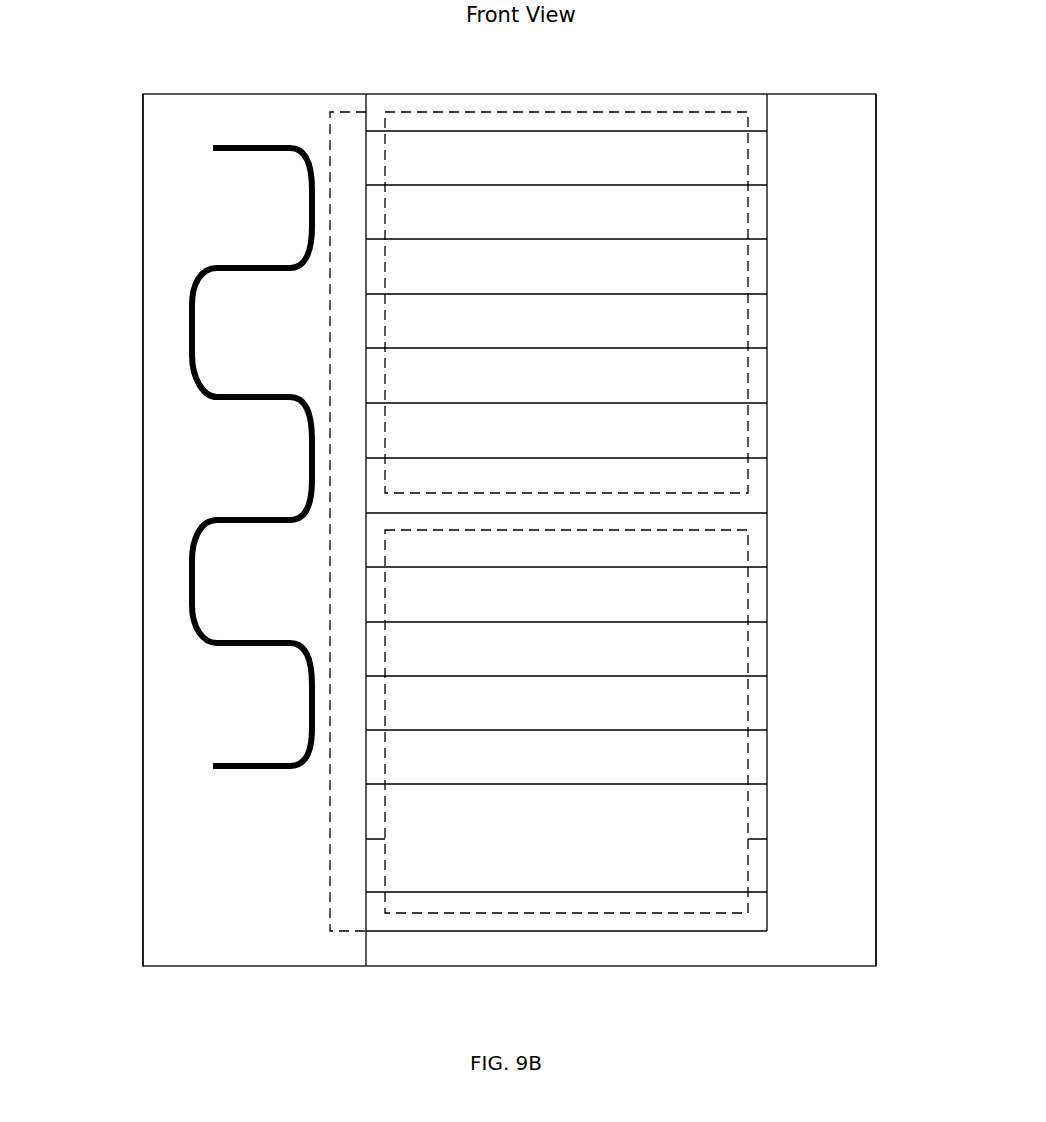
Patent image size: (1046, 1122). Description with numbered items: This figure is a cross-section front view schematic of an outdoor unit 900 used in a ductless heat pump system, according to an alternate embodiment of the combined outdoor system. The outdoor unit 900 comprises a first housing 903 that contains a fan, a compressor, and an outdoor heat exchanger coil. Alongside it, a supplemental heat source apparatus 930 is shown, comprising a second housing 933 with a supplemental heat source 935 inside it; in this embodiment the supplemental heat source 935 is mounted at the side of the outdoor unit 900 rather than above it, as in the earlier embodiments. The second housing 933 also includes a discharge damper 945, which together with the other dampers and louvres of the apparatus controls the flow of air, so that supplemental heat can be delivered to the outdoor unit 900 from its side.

The outdoor unit 900 is at (783, 79).
The first housing 903 is at (878, 273).
The supplemental heat source apparatus 930 is at (125, 187).
The second housing 933 is at (143, 293).
The supplemental heat source 935 is at (233, 268).
The discharge damper 945 is at (730, 673).